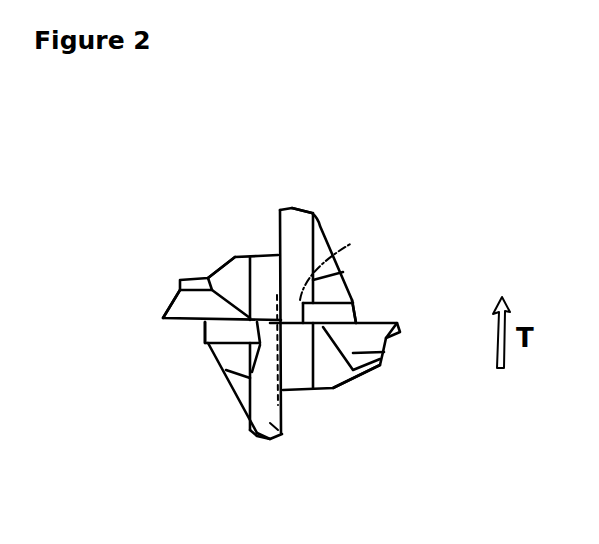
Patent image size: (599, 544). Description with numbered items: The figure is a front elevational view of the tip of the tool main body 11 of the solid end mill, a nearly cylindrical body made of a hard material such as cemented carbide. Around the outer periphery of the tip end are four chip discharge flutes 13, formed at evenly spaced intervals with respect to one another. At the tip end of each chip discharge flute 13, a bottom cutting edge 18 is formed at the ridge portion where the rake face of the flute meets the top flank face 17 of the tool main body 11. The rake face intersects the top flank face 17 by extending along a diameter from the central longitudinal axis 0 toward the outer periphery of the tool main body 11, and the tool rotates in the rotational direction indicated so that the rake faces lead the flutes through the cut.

The tool main body 11 is at (285, 321).
The chip discharge flutes 13 is at (238, 230).
The top flank face 17 is at (293, 210).
The bottom cutting edge 18 is at (278, 255).
The central longitudinal axis 0 is at (324, 211).